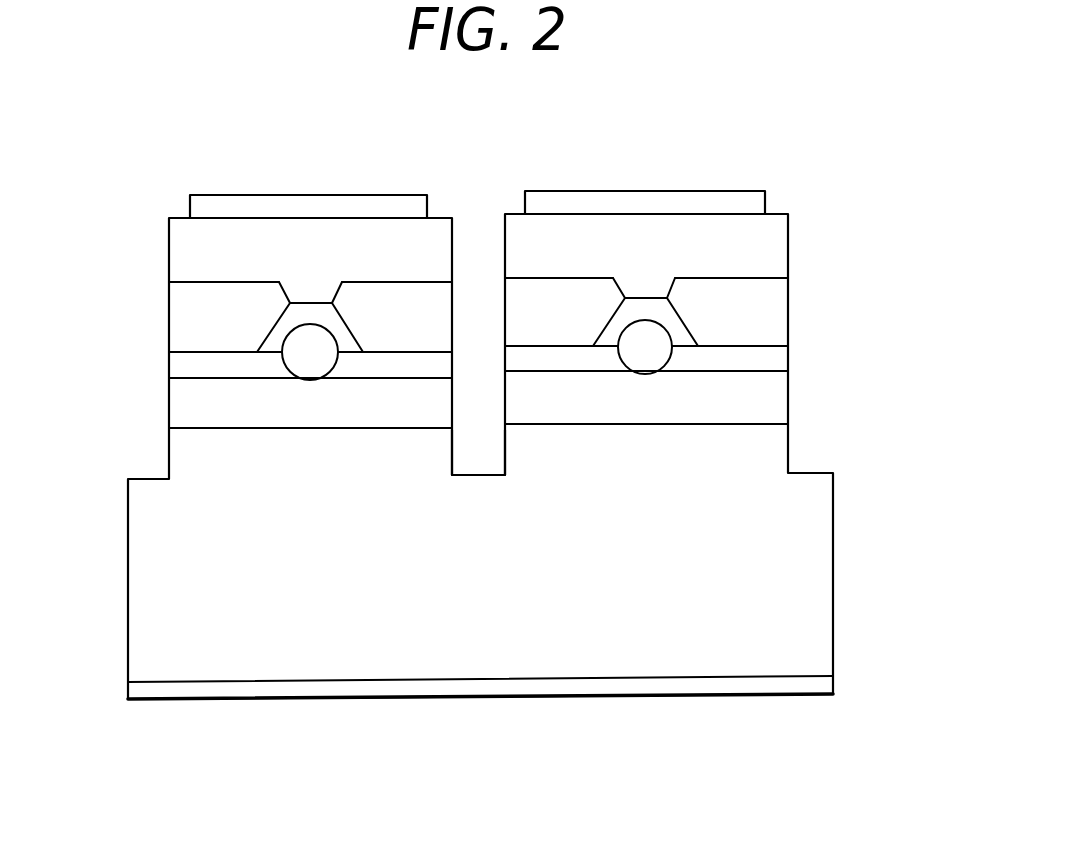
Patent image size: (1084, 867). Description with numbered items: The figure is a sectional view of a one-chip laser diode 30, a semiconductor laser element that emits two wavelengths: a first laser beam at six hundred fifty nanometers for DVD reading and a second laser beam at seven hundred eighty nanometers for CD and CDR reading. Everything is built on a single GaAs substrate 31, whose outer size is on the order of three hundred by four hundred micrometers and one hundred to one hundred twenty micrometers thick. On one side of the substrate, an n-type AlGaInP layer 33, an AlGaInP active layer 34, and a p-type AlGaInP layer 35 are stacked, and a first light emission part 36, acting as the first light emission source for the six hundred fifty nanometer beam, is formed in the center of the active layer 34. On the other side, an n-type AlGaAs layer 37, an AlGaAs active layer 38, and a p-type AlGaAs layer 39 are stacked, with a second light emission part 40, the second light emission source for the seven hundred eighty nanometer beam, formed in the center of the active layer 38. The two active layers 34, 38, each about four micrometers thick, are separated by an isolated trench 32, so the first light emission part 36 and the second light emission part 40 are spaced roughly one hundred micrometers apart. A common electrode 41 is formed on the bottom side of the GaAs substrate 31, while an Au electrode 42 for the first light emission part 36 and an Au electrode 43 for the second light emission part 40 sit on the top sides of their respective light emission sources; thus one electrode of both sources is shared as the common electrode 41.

The one-chip laser diode 30 is at (846, 164).
The GaAs substrate 31 is at (788, 600).
The isolated trench 32 is at (478, 477).
The n-type AlGaInP layer 33 is at (773, 398).
The AlGaInP active layer 34 is at (772, 358).
The p-type AlGaInP layer 35 is at (773, 307).
The first light emission part 36 is at (645, 347).
The n-type AlGaAs layer 37 is at (183, 407).
The AlGaAs active layer 38 is at (185, 367).
The p-type AlGaAs layer 39 is at (183, 313).
The second light emission part 40 is at (310, 352).
The common electrode 41 is at (480, 697).
The Au electrode 42 is at (643, 191).
The Au electrode 43 is at (308, 195).